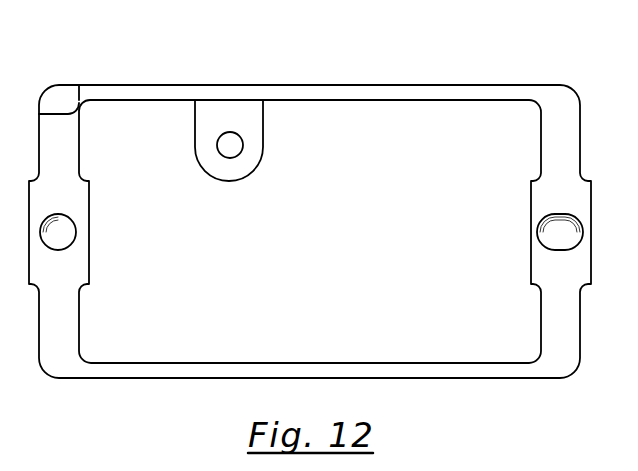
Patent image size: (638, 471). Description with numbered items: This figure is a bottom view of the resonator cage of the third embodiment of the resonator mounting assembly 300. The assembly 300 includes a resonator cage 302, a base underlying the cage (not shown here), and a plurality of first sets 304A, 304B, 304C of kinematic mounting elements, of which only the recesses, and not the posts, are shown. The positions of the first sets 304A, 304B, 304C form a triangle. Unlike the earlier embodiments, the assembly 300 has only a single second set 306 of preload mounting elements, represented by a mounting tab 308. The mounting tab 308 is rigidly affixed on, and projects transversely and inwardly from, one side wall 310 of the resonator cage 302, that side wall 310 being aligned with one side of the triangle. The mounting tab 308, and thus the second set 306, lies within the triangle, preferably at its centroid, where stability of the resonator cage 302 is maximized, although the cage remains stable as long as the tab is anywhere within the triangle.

The resonator mounting assembly 300 is at (310, 202).
The resonator cage 302 is at (353, 72).
The first set of kinematic mounting elements 304A is at (65, 120).
The first set of kinematic mounting elements 304B is at (88, 232).
The first set of kinematic mounting elements 304C is at (535, 233).
The second set of preload mounting elements 306 is at (265, 166).
The mounting tab 308 is at (253, 143).
The side wall 310 is at (478, 85).